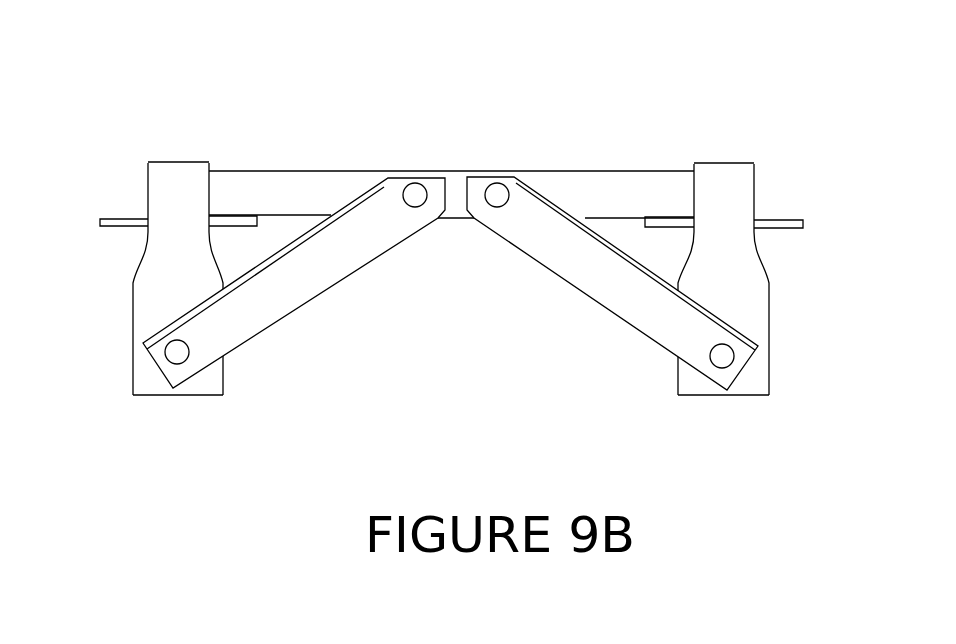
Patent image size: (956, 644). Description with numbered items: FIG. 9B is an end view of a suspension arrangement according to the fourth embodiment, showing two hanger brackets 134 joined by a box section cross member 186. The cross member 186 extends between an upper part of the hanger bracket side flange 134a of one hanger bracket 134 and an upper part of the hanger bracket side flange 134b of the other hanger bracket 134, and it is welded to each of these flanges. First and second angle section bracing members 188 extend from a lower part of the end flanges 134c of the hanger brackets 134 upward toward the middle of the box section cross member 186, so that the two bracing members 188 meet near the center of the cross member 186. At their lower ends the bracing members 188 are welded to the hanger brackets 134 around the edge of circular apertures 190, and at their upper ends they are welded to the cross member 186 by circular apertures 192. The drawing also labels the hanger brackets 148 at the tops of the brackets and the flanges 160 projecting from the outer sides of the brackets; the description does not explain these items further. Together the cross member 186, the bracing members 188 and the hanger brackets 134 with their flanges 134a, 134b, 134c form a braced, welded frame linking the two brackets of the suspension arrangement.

The hanger bracket 134 is at (197, 395).
The hanger bracket side flange 134a is at (677, 372).
The hanger bracket side flange 134b is at (223, 377).
The end flange 134c is at (133, 302).
The hinge assembly 148 is at (198, 132).
The mounting flange 160 is at (135, 212).
The box section cross member 186 is at (288, 171).
The pivot arm 188 is at (363, 262).
The circular aperture 190 is at (188, 349).
The circular aperture 192 is at (418, 186).